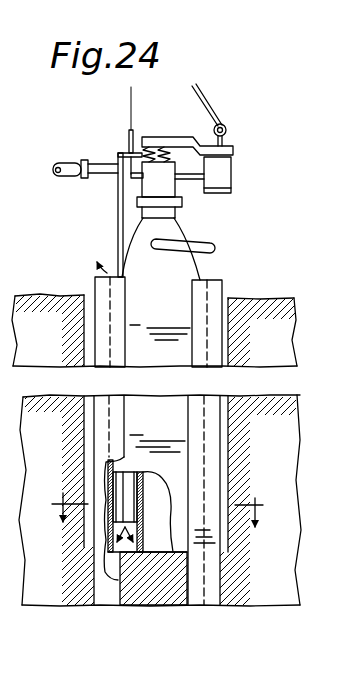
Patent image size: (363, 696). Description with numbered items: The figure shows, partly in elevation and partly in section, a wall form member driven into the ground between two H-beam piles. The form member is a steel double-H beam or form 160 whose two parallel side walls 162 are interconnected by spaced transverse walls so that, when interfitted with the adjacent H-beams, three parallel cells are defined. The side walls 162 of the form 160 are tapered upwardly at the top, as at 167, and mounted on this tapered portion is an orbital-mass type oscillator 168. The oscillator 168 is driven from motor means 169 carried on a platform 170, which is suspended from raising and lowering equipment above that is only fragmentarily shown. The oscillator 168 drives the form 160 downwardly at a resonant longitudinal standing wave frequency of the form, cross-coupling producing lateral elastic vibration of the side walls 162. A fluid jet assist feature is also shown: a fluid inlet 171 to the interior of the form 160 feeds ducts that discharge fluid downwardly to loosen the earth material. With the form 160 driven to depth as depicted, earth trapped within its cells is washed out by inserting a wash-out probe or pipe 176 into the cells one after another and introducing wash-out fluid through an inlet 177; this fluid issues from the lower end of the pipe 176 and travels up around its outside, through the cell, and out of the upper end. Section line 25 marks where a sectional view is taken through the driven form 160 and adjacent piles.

The double-H beam form 160 is at (168, 298).
The side walls 162 is at (160, 345).
The tapered upper portion 167 is at (178, 231).
The orbital-mass type oscillator 168 is at (167, 193).
The motor means 169 is at (232, 165).
The platform 170 is at (230, 135).
The fluid inlet 171 is at (213, 248).
The wash-out probe or pipe 176 is at (118, 230).
The inlet 177 is at (93, 176).
The section line 25- 25 is at (154, 525).